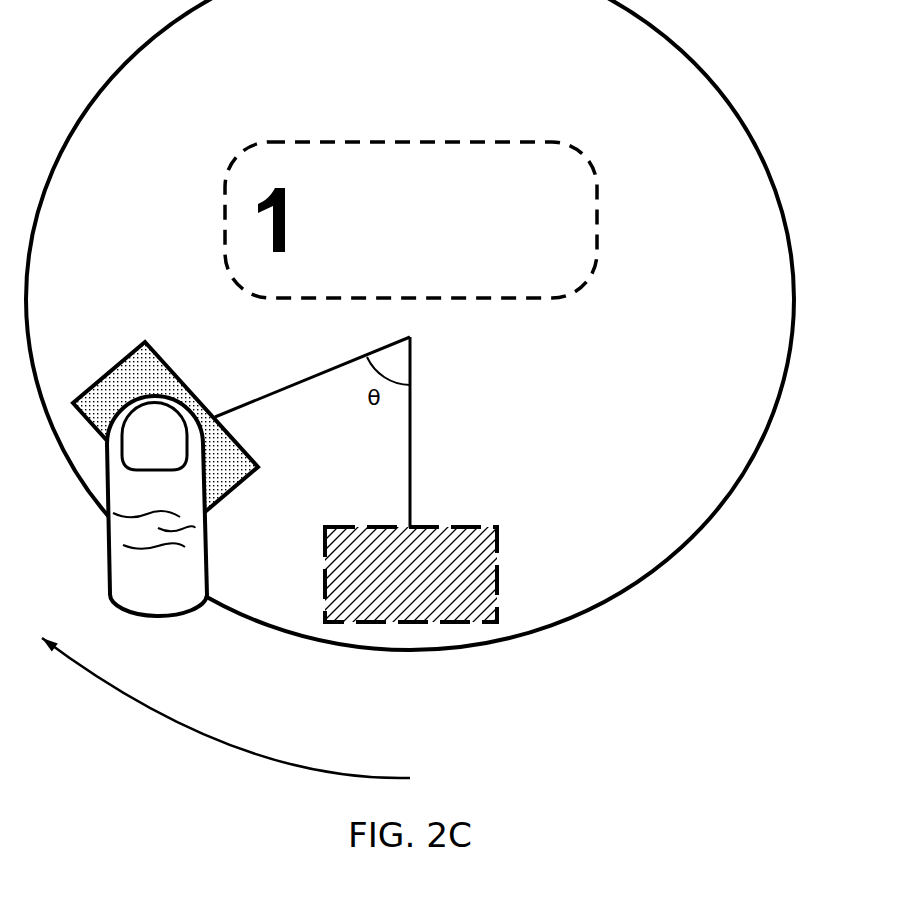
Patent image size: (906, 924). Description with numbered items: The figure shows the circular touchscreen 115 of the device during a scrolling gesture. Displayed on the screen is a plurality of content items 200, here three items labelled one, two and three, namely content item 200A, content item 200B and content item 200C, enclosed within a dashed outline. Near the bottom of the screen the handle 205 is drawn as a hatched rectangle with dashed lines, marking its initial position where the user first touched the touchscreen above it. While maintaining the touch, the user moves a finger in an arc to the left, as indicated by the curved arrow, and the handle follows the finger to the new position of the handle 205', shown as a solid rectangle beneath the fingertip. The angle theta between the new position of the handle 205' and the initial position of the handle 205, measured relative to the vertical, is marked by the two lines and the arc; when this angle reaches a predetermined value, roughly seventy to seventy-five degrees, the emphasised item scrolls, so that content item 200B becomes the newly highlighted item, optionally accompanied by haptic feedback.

The touchscreen 115 is at (712, 80).
The content items 200 is at (410, 143).
The content item "1" 200A is at (290, 198).
The content item "2" 200B is at (433, 193).
The content item "3" 200C is at (568, 212).
The handle 205 is at (412, 577).
The new position of the handle 205' is at (165, 427).